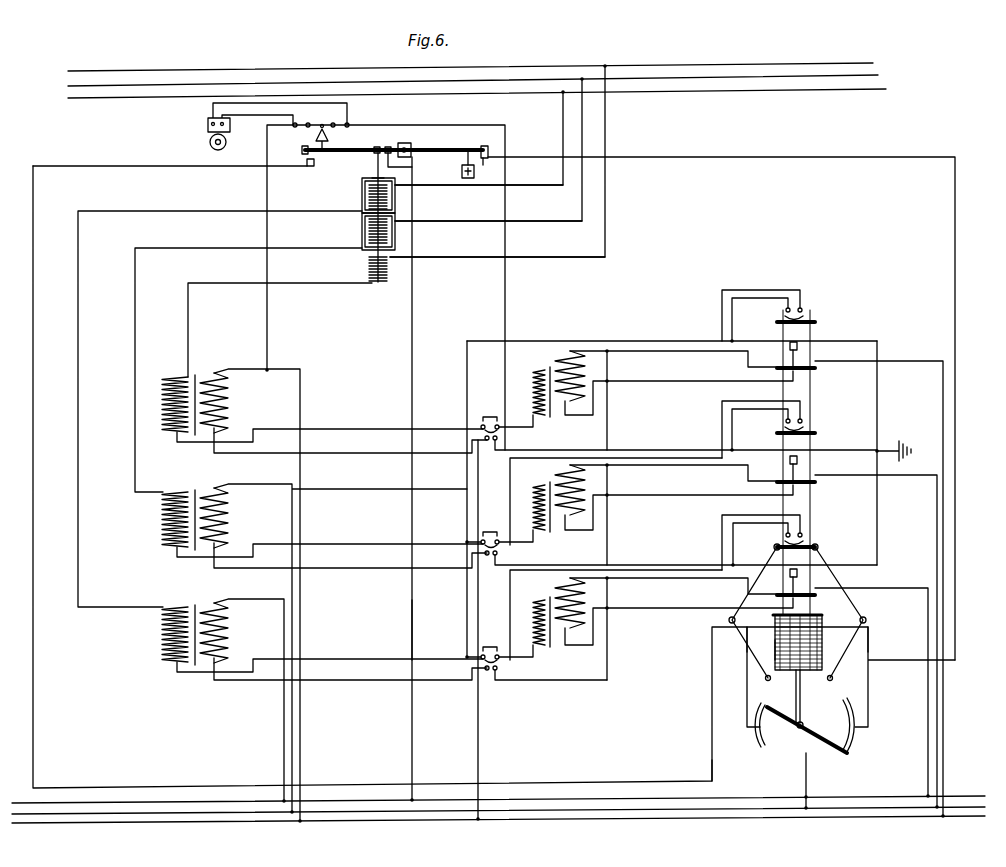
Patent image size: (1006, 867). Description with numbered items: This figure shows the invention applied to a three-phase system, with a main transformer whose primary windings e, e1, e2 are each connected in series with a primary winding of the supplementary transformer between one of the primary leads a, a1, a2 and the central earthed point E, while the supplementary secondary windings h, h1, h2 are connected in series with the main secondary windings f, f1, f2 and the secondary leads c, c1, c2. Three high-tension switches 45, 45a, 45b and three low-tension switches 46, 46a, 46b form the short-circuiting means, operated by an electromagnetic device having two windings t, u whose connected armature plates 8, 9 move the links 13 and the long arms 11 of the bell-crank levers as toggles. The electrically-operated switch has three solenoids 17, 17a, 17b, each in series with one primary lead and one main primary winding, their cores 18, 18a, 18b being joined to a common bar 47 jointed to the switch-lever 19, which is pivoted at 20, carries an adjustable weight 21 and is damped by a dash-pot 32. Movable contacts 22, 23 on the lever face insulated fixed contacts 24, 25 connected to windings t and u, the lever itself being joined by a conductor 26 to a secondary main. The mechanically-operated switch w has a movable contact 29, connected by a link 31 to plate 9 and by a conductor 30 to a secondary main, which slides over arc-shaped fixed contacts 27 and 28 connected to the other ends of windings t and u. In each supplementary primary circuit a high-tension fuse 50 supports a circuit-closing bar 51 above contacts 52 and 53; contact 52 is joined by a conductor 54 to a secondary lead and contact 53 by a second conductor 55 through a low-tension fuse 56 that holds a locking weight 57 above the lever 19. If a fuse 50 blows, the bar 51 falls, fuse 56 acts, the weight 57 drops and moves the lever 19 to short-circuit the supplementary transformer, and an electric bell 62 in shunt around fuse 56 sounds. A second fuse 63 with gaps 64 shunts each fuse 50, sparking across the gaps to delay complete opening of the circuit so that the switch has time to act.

The primary lead a is at (470, 58).
The primary lead a1 is at (473, 72).
The primary lead a2 is at (477, 86).
The electric bell 62 is at (206, 129).
The second conductor 55 is at (445, 125).
The low-tension fuse 56 is at (340, 122).
The locking device 57 is at (318, 136).
The movable contact 22 is at (301, 156).
The movable contact 23 is at (718, 399).
The fixed contact 24 is at (304, 169).
The fixed contact 25 is at (485, 165).
The switch-lever 19 is at (375, 146).
The pivot 20 is at (396, 145).
The weight 21 is at (411, 462).
The dash-pot 32 is at (461, 176).
The common bar 47 is at (360, 183).
The solenoid 17b is at (361, 205).
The core 18b is at (396, 200).
The solenoid 17a is at (361, 238).
The core 18a is at (396, 231).
The solenoid 17 is at (367, 270).
The core 18 is at (388, 268).
The primary winding e is at (158, 408).
The secondary winding f is at (343, 596).
The primary winding e1 is at (309, 523).
The secondary winding f1 is at (343, 649).
The primary winding e2 is at (309, 638).
The secondary winding f2 is at (343, 701).
The conductor 26 is at (404, 633).
The conductor 54 is at (465, 515).
The gap 64 is at (481, 424).
The second fuse 63 is at (487, 528).
The circuit-closing bar 51 is at (479, 429).
The high-tension fuse 50 is at (503, 429).
The contact 52 is at (485, 441).
The contact 53 is at (497, 441).
The movable plate 9 is at (535, 371).
The secondary winding h is at (674, 383).
The secondary winding h1 is at (674, 497).
The secondary winding h2 is at (674, 611).
The high-tension switch 45 is at (778, 316).
The low-tension switch 46 is at (861, 580).
The high-tension switch 45a is at (785, 429).
The low-tension switch 46a is at (858, 632).
The high-tension switch 45b is at (785, 542).
The low-tension switch 46b is at (853, 683).
The central earthed point E is at (893, 442).
The link 13 is at (776, 588).
The movable plate 8 is at (820, 613).
The winding t is at (805, 642).
The long arm 11 is at (755, 640).
The winding u is at (765, 644).
The link 31 is at (795, 694).
The movable contact 29 is at (816, 730).
The arc-shaped fixed contact 28 is at (761, 746).
The arc-shaped fixed contact 27 is at (848, 741).
The mechanically-operated switch w is at (791, 767).
The conductor 30 is at (758, 770).
The secondary lead c is at (352, 800).
The secondary lead c1 is at (377, 811).
The secondary lead c2 is at (402, 820).